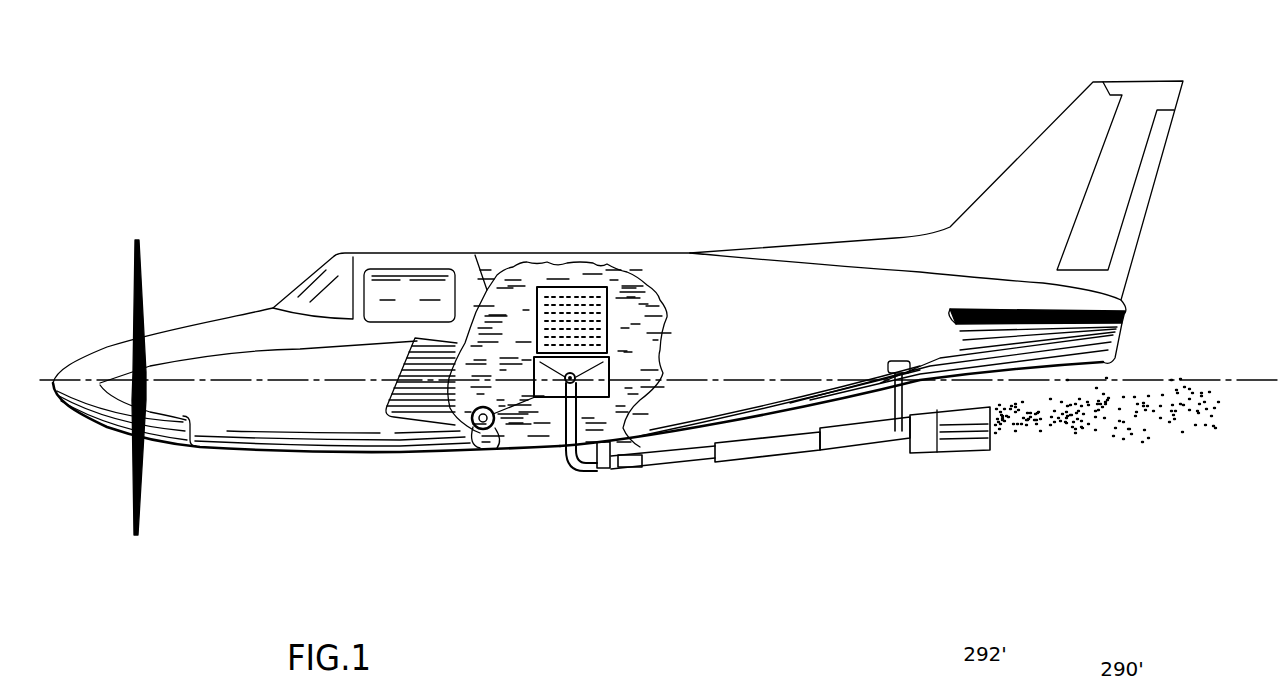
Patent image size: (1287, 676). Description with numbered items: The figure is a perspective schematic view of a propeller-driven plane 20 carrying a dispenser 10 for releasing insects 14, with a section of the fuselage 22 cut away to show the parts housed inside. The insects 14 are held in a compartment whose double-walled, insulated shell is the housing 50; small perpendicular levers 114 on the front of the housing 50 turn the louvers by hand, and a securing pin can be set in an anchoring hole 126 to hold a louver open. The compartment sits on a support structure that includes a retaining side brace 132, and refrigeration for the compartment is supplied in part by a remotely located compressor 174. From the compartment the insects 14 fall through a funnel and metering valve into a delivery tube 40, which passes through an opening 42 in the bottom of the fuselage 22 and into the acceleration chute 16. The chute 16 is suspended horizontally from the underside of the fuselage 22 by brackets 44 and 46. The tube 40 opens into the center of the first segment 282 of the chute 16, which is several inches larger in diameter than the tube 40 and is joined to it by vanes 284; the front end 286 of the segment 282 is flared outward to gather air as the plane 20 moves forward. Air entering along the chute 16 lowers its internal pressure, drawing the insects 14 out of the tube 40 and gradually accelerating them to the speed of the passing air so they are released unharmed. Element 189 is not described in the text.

The dispenser 10 is at (700, 478).
The insects 14 is at (1127, 432).
The acceleration chute 16 is at (847, 457).
The plane 20 is at (247, 452).
The fuselage 22 is at (836, 330).
The delivery tube 40 is at (582, 472).
The opening 42 is at (557, 450).
The bracket 44 is at (647, 470).
The bracket 46 is at (918, 408).
The housing 50 is at (617, 363).
The lever 114 is at (573, 300).
The anchoring hole 126 is at (612, 368).
The side brace 132 is at (475, 255).
The compressor 174 is at (475, 447).
The pump mount 189 is at (497, 440).
The first segment 282 is at (688, 440).
The vanes 284 is at (617, 473).
The front end 286 is at (637, 472).